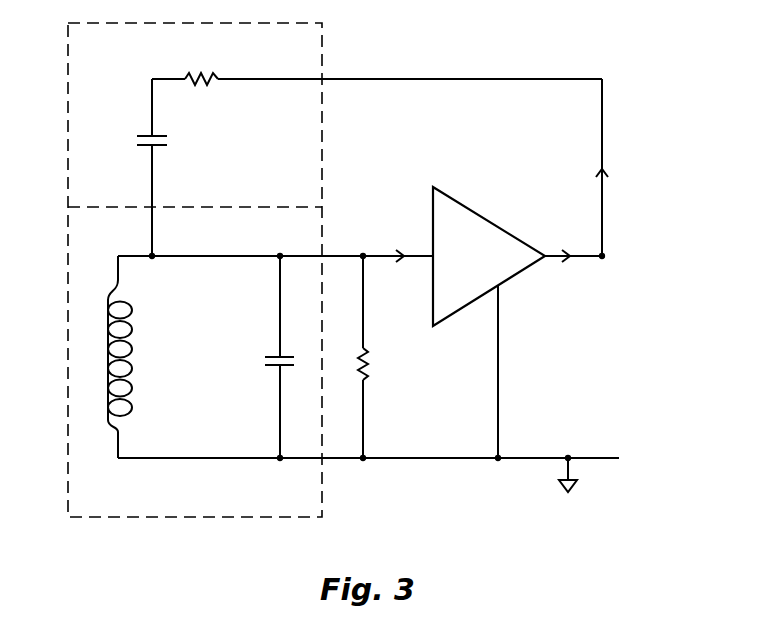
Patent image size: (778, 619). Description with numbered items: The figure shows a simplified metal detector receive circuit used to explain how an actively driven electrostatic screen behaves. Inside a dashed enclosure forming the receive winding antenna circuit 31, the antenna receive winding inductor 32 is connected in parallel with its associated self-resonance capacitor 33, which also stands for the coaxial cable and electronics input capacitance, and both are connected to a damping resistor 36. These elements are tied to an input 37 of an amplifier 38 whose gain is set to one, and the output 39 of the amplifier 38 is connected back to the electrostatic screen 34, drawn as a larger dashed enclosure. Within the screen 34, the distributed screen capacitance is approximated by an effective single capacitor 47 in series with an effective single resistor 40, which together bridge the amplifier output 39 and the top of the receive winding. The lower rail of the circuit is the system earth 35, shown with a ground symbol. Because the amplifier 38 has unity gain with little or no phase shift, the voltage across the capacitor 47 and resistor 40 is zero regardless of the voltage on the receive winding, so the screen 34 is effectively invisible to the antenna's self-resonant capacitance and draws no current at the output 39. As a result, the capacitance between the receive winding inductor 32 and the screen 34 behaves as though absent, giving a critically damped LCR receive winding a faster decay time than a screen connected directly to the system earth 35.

The receive winding antenna circuit 31 is at (150, 518).
The antenna receive winding inductor 32 is at (131, 366).
The self-resonance capacitor 33 is at (270, 355).
The electrostatic screen 34 is at (322, 57).
The system earth 35 is at (430, 460).
The damping resistor 36 is at (369, 362).
The input of amplifier 37 is at (383, 253).
The amplifier 38 is at (492, 222).
The output of amplifier 39 is at (602, 223).
The effective single resistor 40 is at (207, 73).
The effective single capacitor 47 is at (157, 146).